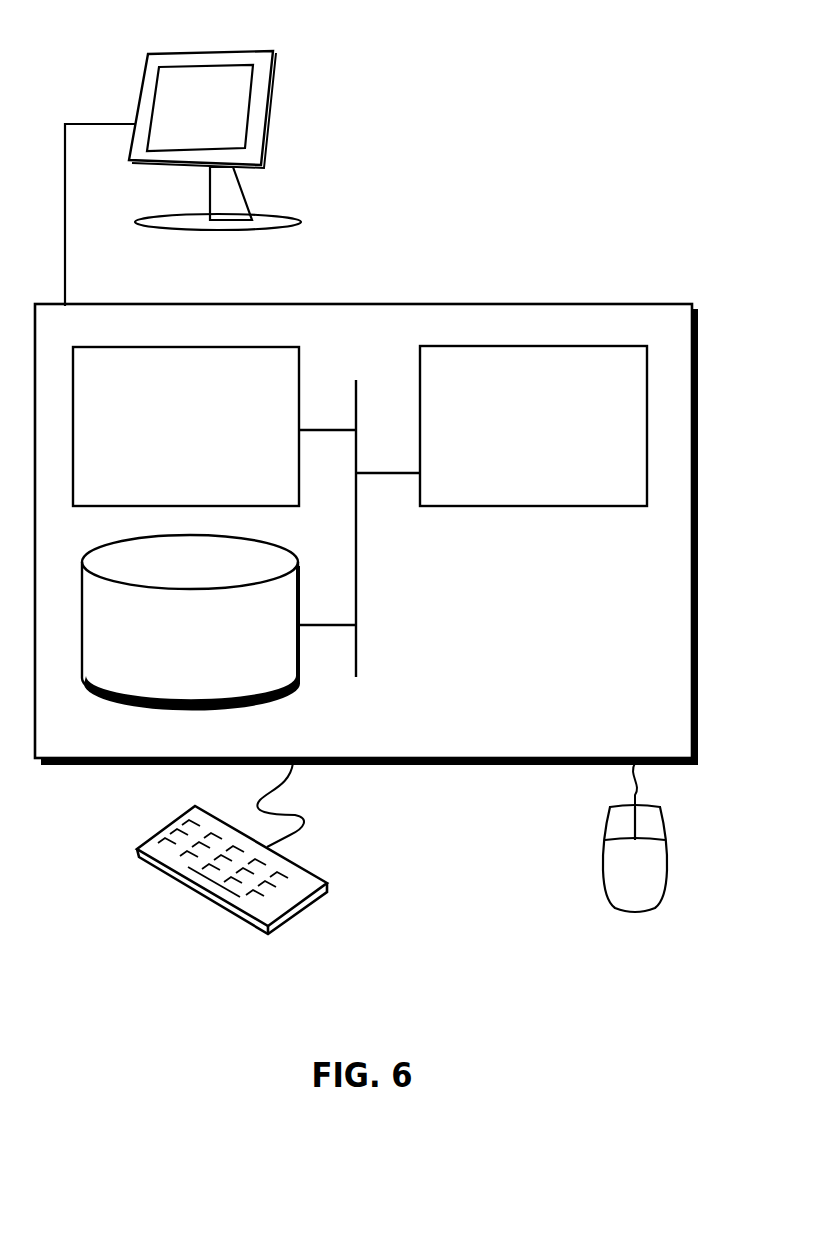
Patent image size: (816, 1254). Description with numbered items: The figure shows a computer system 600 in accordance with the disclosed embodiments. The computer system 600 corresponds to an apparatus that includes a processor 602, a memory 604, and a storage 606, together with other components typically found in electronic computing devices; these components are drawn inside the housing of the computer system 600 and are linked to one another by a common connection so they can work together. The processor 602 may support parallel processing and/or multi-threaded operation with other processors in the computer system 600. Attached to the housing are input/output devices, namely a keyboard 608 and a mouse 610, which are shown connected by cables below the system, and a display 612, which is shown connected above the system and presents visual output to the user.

The computer system 600 is at (410, 283).
The processor 602 is at (516, 440).
The memory 604 is at (166, 437).
The storage 606 is at (172, 649).
The keyboard 608 is at (158, 870).
The mouse 610 is at (614, 880).
The display 612 is at (183, 178).